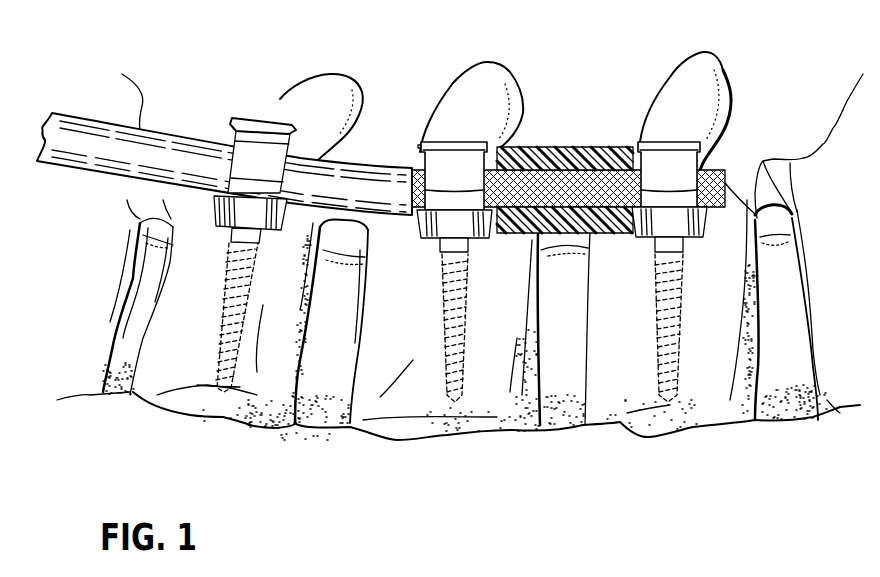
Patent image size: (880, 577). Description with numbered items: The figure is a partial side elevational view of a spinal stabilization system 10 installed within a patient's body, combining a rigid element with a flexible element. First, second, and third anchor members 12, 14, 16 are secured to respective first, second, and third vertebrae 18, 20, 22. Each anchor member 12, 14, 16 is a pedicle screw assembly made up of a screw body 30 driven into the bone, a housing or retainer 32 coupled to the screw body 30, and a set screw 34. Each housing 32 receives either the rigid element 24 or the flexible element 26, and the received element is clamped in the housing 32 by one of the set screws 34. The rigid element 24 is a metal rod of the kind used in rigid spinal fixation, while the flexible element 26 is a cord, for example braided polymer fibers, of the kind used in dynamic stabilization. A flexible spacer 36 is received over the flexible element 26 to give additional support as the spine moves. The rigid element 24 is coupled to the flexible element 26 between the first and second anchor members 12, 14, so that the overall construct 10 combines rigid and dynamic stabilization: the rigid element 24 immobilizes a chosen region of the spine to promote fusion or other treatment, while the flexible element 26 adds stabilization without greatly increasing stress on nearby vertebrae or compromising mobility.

The spinal stabilization system 10 is at (408, 213).
The first anchor member 12 is at (265, 241).
The second anchor member 14 is at (472, 242).
The third anchor member 16 is at (654, 242).
The first vertebra 18 is at (226, 422).
The second vertebra 20 is at (463, 437).
The third vertebra 22 is at (688, 437).
The rigid element 24 is at (78, 114).
The flexible element 26 is at (723, 177).
The screw body 30 is at (220, 339).
The housing 32 is at (210, 212).
The set screw 34 is at (266, 120).
The flexible spacer 36 is at (581, 145).